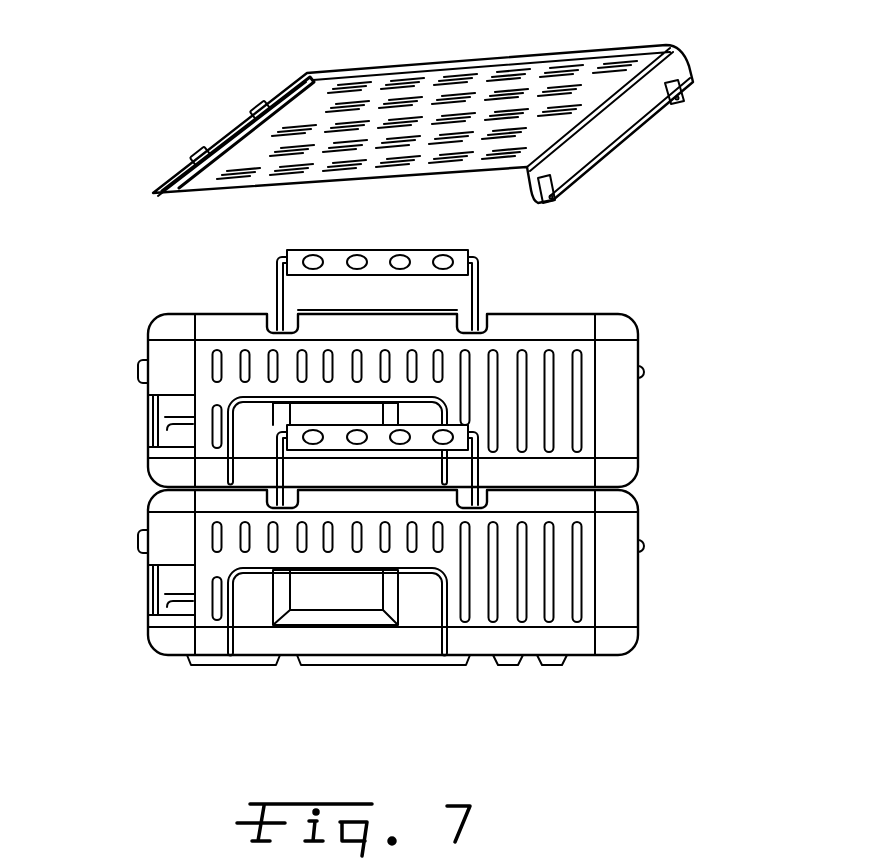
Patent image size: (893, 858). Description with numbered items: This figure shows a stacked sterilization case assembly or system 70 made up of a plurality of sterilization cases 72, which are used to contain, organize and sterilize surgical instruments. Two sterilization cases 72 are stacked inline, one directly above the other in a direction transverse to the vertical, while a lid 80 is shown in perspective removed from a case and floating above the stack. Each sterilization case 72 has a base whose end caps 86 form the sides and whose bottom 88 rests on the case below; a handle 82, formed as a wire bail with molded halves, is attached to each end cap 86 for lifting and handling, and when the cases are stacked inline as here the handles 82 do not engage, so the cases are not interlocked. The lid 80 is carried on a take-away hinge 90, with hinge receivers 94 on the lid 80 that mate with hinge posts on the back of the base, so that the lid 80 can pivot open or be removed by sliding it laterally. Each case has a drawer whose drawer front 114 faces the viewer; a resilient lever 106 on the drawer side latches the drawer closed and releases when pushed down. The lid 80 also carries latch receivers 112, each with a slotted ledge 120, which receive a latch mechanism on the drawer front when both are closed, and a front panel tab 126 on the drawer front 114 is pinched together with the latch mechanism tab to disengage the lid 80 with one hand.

The stacked sterilization case assembly 70 is at (123, 92).
The sterilization case 72 is at (692, 404).
The lid 80 is at (497, 60).
The handle 82 is at (422, 258).
The end cap 86 is at (208, 352).
The bottom 88 is at (390, 664).
The take-away hinge 90 is at (642, 373).
The hinge receiver 94 is at (682, 100).
The resilient lever 106 is at (165, 428).
The latch receiver 112 is at (224, 137).
The drawer front 114 is at (148, 347).
The slotted ledge 120 is at (262, 106).
The front panel tab 126 is at (140, 373).